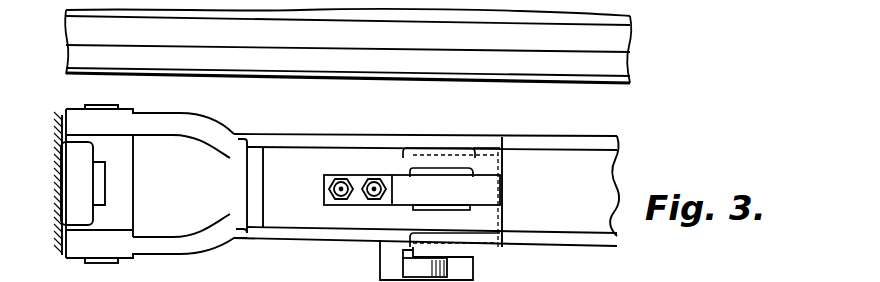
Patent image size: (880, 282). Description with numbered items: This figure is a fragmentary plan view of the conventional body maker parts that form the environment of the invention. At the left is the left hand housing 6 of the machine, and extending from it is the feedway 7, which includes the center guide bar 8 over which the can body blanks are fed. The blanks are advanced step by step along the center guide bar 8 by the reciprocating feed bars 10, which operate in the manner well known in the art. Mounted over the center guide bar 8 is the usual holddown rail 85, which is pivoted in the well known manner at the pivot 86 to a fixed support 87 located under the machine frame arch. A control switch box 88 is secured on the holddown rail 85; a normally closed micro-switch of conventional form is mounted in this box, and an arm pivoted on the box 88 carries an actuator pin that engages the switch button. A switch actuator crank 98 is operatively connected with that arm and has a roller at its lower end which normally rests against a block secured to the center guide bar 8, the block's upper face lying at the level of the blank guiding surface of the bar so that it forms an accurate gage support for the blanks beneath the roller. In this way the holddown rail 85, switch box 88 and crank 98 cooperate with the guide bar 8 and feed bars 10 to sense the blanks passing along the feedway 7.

The left hand housing 6 is at (426, 208).
The feedway 7 is at (576, 275).
The center guide bar 8 is at (535, 135).
The reciprocating feed bars 10 is at (156, 193).
The holddown rail 85 is at (578, 165).
The pivot 86 is at (116, 107).
The fixed support 87 is at (60, 169).
The control switch box 88 is at (363, 160).
The switch actuator crank 98 is at (443, 253).